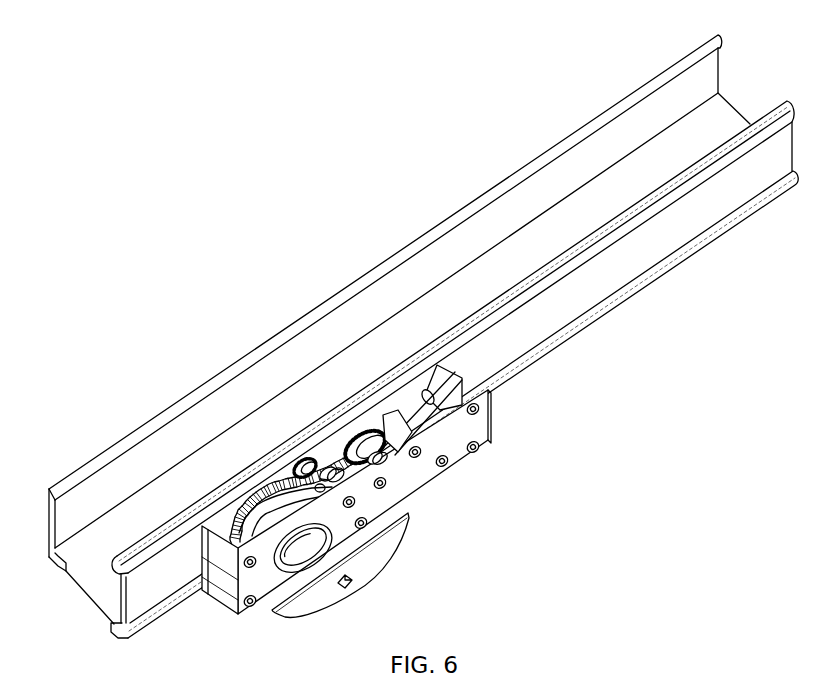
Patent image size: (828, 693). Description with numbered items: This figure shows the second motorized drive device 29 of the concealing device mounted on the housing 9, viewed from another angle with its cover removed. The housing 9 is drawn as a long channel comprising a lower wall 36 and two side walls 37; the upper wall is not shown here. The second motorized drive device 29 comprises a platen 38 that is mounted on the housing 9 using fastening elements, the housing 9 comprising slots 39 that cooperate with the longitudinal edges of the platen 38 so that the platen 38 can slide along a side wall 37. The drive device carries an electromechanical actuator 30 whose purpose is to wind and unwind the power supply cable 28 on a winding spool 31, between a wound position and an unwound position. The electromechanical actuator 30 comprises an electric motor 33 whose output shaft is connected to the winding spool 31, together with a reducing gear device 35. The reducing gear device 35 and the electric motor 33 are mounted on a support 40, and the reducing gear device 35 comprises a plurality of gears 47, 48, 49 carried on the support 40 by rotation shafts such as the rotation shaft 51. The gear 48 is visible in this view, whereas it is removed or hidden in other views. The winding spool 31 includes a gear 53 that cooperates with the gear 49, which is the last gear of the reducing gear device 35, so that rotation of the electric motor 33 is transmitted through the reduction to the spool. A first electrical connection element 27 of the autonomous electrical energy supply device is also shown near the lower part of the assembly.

The housing 9 is at (493, 166).
The first electrical connection element 27 is at (345, 590).
The power supply cable 28 is at (268, 515).
The second motorized drive device 29 is at (486, 474).
The electromechanical actuator 30 is at (347, 416).
The winding spool 31 is at (269, 512).
The electric motor 33 is at (417, 410).
The reducing gear device 35 is at (303, 456).
The lower wall 36 is at (80, 575).
The side wall 37 is at (102, 488).
The platen 38 is at (208, 552).
The slots 39 is at (123, 630).
The support 40 is at (433, 475).
The gear 47 is at (375, 453).
The gear 48 is at (350, 440).
The gear 49 is at (318, 485).
The rotation shaft 51 is at (331, 476).
The gear 53 is at (240, 518).